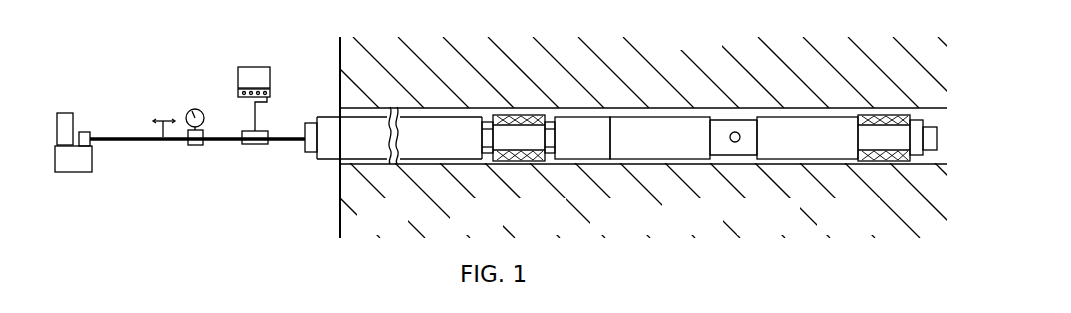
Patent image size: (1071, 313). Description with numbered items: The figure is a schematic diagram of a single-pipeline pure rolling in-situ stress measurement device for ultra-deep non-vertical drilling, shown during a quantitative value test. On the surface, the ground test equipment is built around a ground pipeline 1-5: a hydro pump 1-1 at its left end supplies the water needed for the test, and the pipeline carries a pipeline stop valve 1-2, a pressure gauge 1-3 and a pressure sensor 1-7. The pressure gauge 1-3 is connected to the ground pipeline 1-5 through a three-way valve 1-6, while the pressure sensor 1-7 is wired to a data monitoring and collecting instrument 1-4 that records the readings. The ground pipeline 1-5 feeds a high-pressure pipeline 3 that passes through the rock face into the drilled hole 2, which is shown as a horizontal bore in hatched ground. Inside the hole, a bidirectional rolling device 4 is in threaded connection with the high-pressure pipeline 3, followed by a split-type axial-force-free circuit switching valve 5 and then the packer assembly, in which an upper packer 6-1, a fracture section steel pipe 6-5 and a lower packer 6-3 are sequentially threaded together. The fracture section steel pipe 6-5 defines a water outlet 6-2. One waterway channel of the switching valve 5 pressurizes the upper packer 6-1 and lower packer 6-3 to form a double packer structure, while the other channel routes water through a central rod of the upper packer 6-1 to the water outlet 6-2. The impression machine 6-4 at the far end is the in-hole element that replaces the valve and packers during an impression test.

The hydro pump 1-1 is at (69, 120).
The pipeline stop valve 1-2 is at (163, 121).
The pressure gauge 1-3 is at (201, 110).
The data monitoring and collecting instrument 1-4 is at (305, 47).
The ground pipeline 1-5 is at (125, 140).
The three-way valve 1-6 is at (193, 146).
The pressure sensor 1-7 is at (252, 144).
The drilled hole 2 is at (338, 192).
The high-pressure pipeline 3 is at (425, 137).
The bidirectional rolling device 4 is at (522, 135).
The split-type axial-force-free circuit switching valve 5 is at (582, 135).
The upper packer 6-1 is at (672, 138).
The water outlet 6-2 is at (740, 143).
The lower packer 6-3 is at (817, 137).
The impression machine 6-4 is at (897, 137).
The fracture section steel pipe 6-5 is at (748, 127).